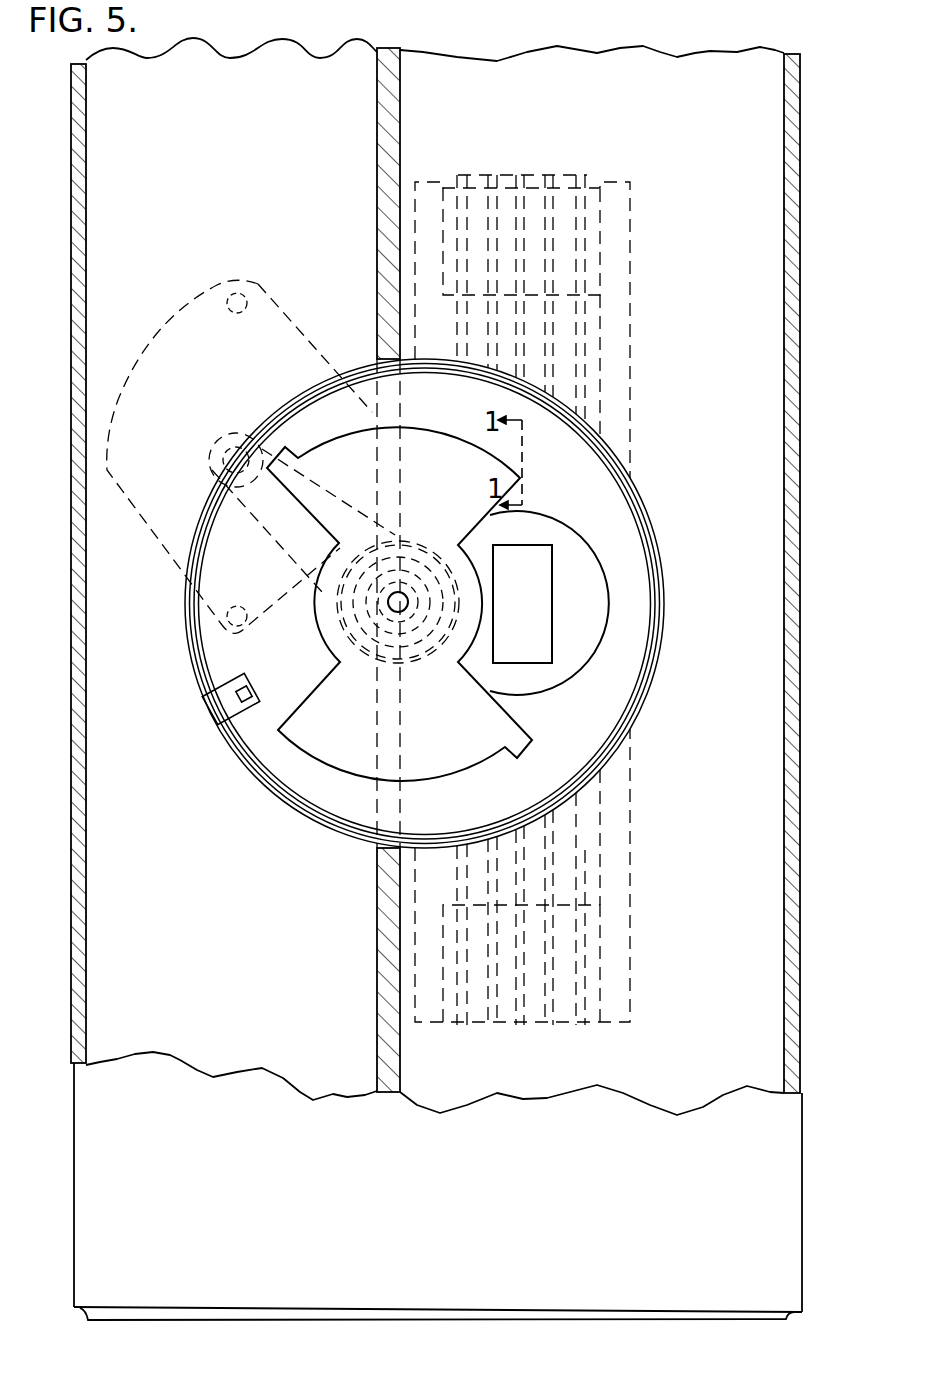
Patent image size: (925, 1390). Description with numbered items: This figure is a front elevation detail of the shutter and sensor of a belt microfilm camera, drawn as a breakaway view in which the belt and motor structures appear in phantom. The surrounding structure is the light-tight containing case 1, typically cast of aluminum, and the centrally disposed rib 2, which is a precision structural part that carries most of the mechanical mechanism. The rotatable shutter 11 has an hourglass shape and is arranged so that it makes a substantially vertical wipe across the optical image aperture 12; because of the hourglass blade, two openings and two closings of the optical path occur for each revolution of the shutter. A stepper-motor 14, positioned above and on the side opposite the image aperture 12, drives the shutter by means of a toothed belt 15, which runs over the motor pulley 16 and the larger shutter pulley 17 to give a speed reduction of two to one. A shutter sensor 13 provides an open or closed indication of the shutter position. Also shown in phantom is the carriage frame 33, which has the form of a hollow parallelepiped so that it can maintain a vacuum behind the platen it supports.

The light-tight containing case 1 is at (765, 1240).
The rib 2 is at (378, 985).
The rotatable shutter 11 is at (458, 488).
The optical image aperture 12 is at (558, 568).
The shutter sensor 13 is at (249, 708).
The stepper-motor 14 is at (327, 356).
The toothed belt 15 is at (346, 492).
The motor pulley 16 is at (243, 432).
The shutter pulley 17 is at (427, 647).
The carriage frame 33 is at (632, 978).